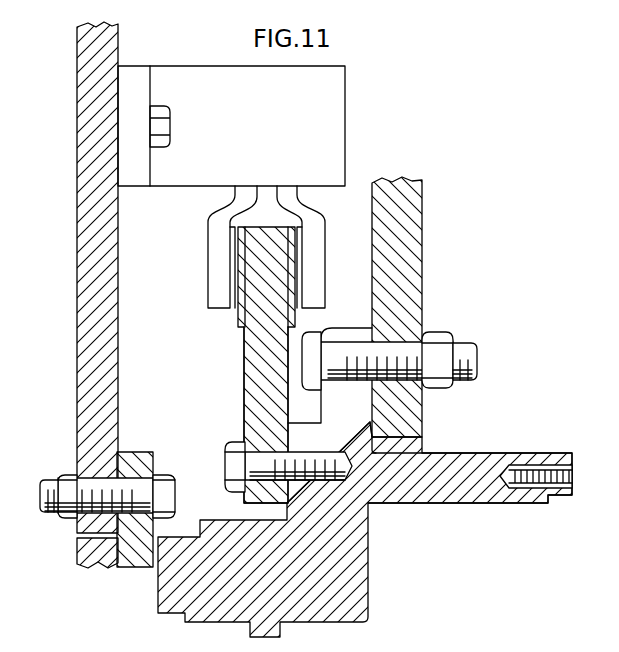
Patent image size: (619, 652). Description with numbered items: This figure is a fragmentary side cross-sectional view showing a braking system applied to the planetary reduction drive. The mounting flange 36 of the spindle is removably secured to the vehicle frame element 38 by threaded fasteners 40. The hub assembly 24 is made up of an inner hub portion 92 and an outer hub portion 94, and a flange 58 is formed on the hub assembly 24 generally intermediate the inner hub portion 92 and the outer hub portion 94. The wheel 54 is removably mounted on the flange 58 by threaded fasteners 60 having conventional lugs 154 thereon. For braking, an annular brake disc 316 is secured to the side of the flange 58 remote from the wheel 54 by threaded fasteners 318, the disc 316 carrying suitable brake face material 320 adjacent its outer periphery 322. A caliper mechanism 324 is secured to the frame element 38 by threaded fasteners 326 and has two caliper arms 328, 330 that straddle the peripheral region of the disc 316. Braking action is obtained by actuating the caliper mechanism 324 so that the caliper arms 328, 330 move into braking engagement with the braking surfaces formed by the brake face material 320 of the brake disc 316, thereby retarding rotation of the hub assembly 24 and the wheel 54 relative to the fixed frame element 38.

The hub assembly 24 is at (430, 443).
The mounting flange 36 is at (133, 452).
The frame element 38 is at (77, 252).
The threaded fasteners 40 is at (162, 475).
The wheel 54 is at (417, 233).
The flange 58 is at (350, 327).
The threaded fasteners 60 is at (468, 343).
The inner hub portion 92 is at (277, 577).
The outer hub portion 94 is at (475, 463).
The lugs 154 is at (442, 333).
The annular brake disc 316 is at (262, 369).
The threaded fasteners 318 is at (235, 457).
The brake face material 320 is at (288, 307).
The outer periphery 322 is at (265, 238).
The caliper mechanism 324 is at (278, 137).
The threaded fasteners 326 is at (171, 123).
The caliper arm 328 is at (215, 261).
The caliper arm 330 is at (320, 255).